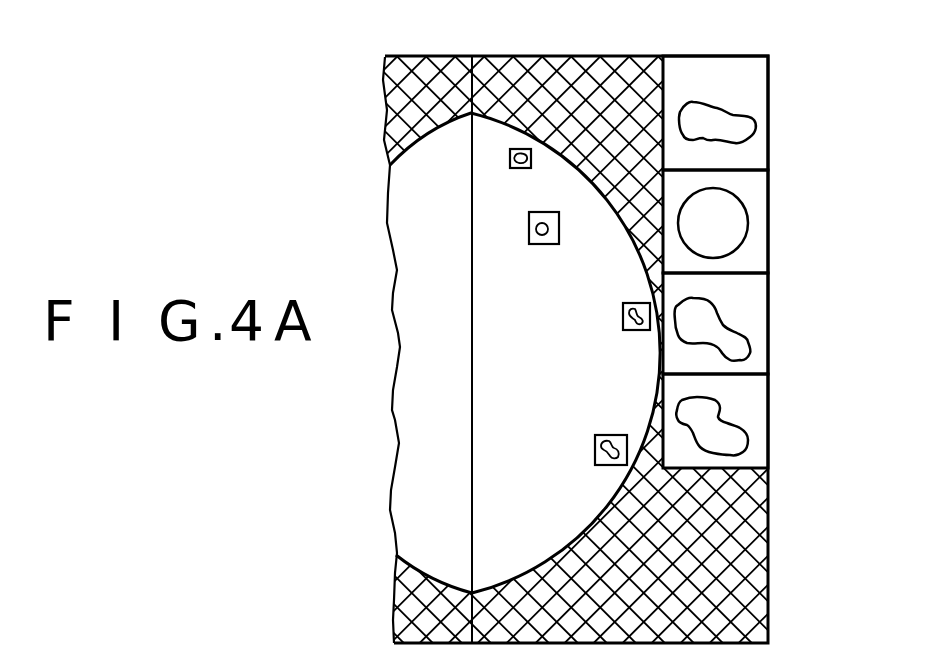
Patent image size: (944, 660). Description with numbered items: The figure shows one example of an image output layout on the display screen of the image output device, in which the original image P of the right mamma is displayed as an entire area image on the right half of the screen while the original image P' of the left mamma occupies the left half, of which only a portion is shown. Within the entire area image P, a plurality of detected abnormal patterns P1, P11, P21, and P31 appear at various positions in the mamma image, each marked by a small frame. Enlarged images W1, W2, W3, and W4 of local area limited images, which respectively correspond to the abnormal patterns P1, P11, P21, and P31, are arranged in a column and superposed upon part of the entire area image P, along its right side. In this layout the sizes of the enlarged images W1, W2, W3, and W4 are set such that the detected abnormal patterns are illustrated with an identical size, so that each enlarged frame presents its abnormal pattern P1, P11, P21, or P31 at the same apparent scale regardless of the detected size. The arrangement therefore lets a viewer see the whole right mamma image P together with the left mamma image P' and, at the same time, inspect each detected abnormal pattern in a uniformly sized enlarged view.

The original image of the right mamma P is at (472, 327).
The original image of the left mamma P' is at (427, 327).
The enlarged image of local area limited image W1 is at (768, 93).
The enlarged image of local area limited image W2 is at (762, 195).
The enlarged image of local area limited image W3 is at (760, 303).
The enlarged image of local area limited image W4 is at (760, 405).
The abnormal pattern P1 is at (752, 127).
The abnormal pattern P11 is at (735, 238).
The abnormal pattern P21 is at (740, 345).
The abnormal pattern P31 is at (740, 440).